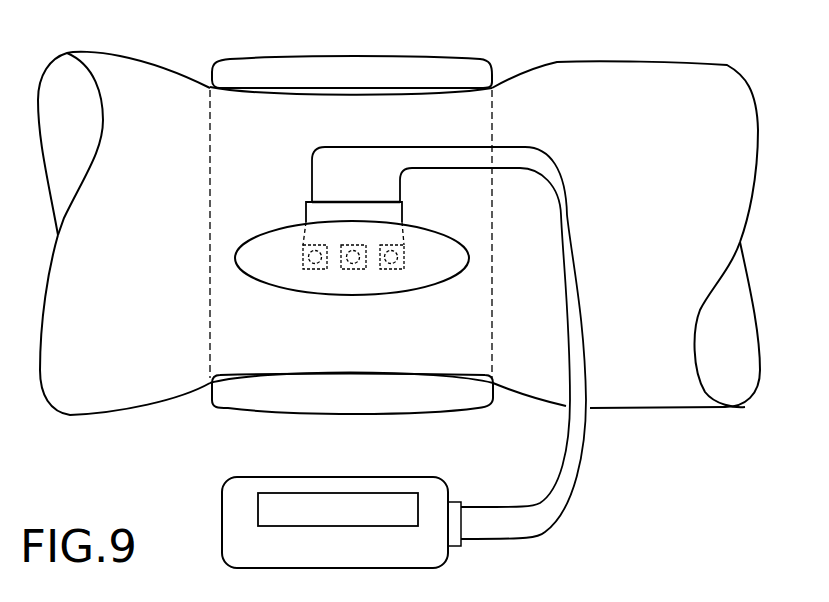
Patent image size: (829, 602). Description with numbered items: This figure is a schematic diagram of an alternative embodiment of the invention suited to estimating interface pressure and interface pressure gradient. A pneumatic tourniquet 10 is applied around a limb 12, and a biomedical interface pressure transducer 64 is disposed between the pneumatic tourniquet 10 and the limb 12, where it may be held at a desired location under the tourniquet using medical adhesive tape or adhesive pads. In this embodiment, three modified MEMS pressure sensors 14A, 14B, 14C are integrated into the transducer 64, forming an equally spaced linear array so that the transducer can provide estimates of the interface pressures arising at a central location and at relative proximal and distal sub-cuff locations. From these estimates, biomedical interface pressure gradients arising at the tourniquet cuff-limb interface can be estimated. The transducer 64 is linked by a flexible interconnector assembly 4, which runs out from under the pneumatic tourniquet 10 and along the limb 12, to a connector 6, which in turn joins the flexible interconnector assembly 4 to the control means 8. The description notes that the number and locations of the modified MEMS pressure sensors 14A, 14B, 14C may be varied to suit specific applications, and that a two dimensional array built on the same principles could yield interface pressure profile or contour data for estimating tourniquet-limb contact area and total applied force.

The flexible interconnector assembly 4 is at (524, 152).
The connector 6 is at (455, 500).
The control means 8 is at (255, 483).
The pneumatic tourniquet 10 is at (433, 64).
The limb 12 is at (588, 70).
The modified MEMS pressure sensor 14A is at (311, 266).
The modified MEMS pressure sensor 14B is at (353, 266).
The modified MEMS pressure sensor 14C is at (391, 266).
The biomedical interface pressure transducer 64 is at (432, 242).